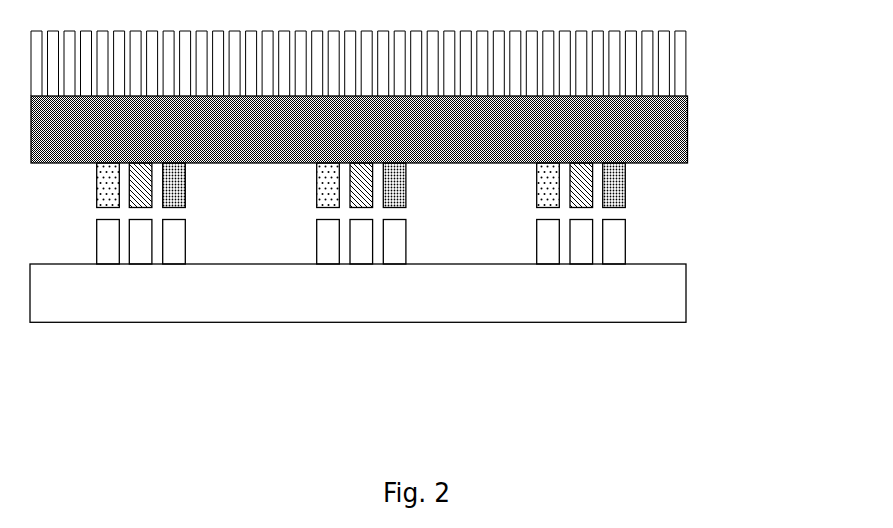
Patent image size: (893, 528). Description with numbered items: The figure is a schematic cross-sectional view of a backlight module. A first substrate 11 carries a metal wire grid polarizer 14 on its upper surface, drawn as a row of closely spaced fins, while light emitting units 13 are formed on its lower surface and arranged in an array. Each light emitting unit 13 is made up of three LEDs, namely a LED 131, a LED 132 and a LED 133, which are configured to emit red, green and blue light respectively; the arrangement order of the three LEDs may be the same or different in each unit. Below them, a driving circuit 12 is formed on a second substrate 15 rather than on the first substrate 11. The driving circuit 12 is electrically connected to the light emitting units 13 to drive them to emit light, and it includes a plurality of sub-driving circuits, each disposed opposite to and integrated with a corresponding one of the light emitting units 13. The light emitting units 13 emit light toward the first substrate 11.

The metal wire grid polarizer 14 is at (688, 62).
The first substrate 11 is at (688, 129).
The driving circuit 12 is at (626, 240).
The light emitting unit 13 is at (361, 303).
The LED 131 is at (331, 195).
The LED 132 is at (360, 198).
The LED 133 is at (404, 200).
The second substrate 15 is at (686, 293).